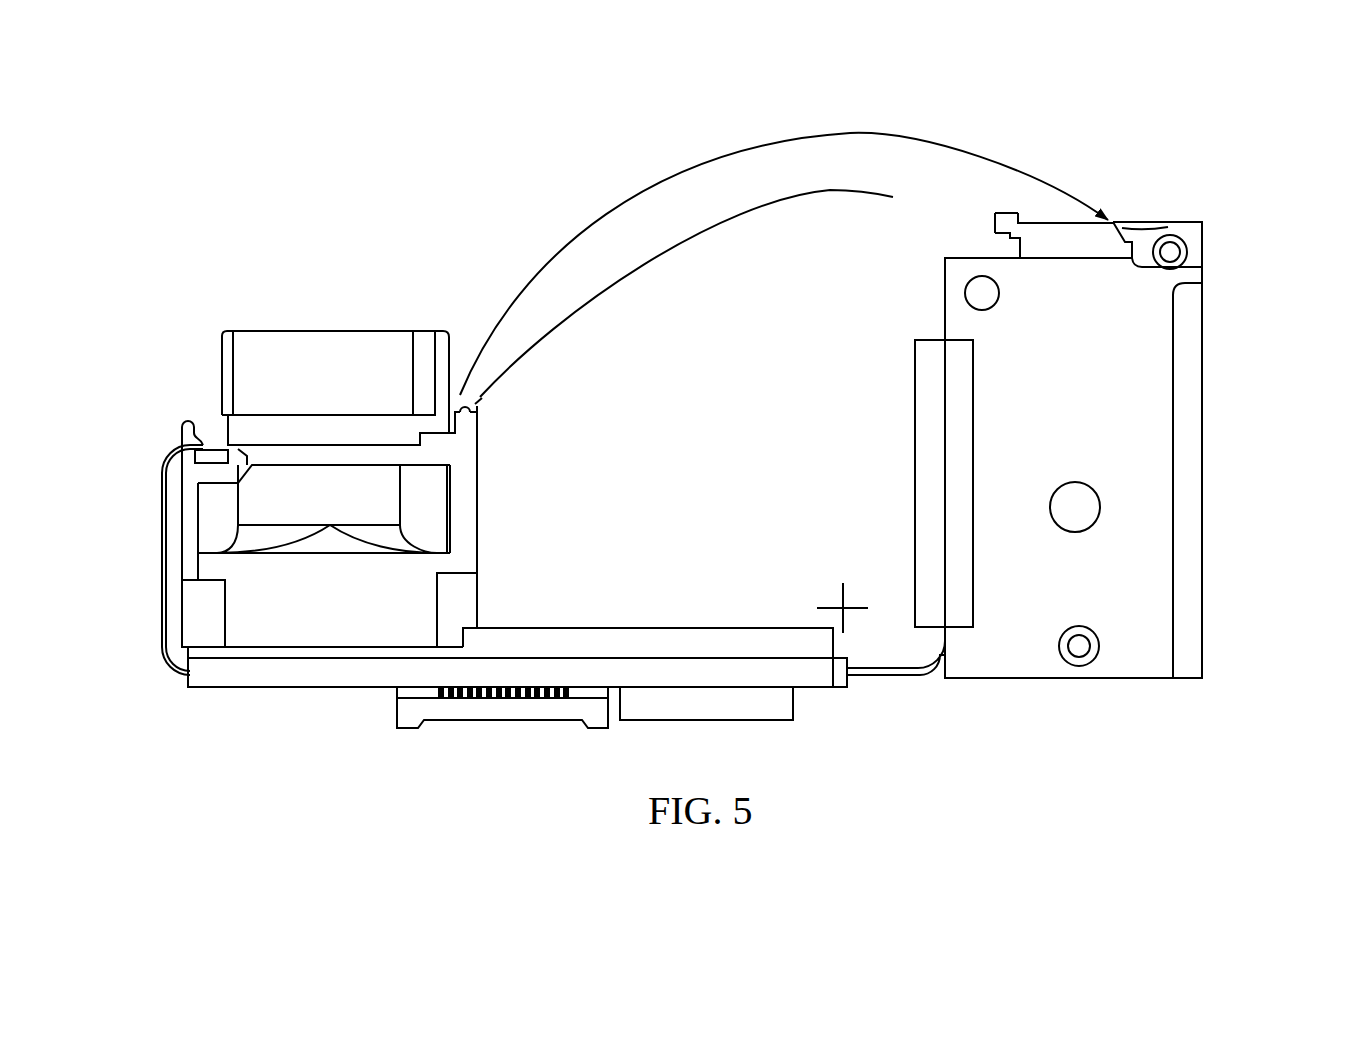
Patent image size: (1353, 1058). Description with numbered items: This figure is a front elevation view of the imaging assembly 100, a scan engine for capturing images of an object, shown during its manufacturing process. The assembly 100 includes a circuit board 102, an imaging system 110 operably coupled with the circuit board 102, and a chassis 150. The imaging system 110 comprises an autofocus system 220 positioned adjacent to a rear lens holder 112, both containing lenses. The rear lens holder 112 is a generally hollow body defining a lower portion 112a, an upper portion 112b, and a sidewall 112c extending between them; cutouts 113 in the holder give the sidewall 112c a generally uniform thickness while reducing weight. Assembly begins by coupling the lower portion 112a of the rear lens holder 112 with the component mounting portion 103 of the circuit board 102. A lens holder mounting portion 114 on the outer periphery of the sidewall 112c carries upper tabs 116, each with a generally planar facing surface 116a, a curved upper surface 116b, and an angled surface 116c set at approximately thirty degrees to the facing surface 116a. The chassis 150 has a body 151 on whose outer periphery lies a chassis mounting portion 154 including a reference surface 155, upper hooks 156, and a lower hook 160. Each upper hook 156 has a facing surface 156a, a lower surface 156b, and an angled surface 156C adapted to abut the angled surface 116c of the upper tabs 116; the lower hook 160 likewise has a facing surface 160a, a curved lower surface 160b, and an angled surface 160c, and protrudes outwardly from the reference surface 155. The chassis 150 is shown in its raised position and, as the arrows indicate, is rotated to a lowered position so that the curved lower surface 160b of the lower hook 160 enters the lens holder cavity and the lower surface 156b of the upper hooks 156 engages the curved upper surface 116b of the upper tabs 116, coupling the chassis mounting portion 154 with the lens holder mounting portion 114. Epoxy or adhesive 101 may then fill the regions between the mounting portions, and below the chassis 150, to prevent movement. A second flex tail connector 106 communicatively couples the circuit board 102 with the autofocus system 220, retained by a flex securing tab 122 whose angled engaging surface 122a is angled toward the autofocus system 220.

The assembly 100 is at (208, 156).
The imaging system 110 is at (153, 336).
The epoxy or adhesive 101 is at (808, 645).
The circuit board 102 is at (343, 682).
The component mounting portion 103 is at (258, 652).
The second flex tail connector 106 is at (160, 580).
The rear lens holder 112 is at (190, 507).
The lower portion 112a is at (186, 640).
The upper portion 112b is at (183, 474).
The sidewall 112c is at (202, 612).
The cutouts 113 is at (215, 545).
The lens holder mounting portion 114 is at (484, 389).
The upper tabs 116 is at (468, 412).
The facing surface 116a is at (480, 491).
The curved upper surface 116b is at (477, 403).
The angled surface 116c is at (458, 397).
The flex securing tab 122 is at (178, 440).
The angled engaging surface 122a is at (186, 422).
The autofocus system 220 is at (331, 343).
The chassis 150 is at (1133, 655).
The body 151 is at (1103, 353).
The chassis mounting portion 154 is at (1147, 160).
The reference surface 155 is at (1076, 248).
The upper hooks 156 is at (1190, 217).
The facing surface 156a is at (1195, 217).
The lower surface 156b is at (1078, 200).
The angled surface 156C is at (1187, 262).
The lower hook 160 is at (1000, 212).
The facing surface 160a is at (1024, 210).
The curved lower surface 160b is at (992, 217).
The angled surface 160c is at (992, 232).